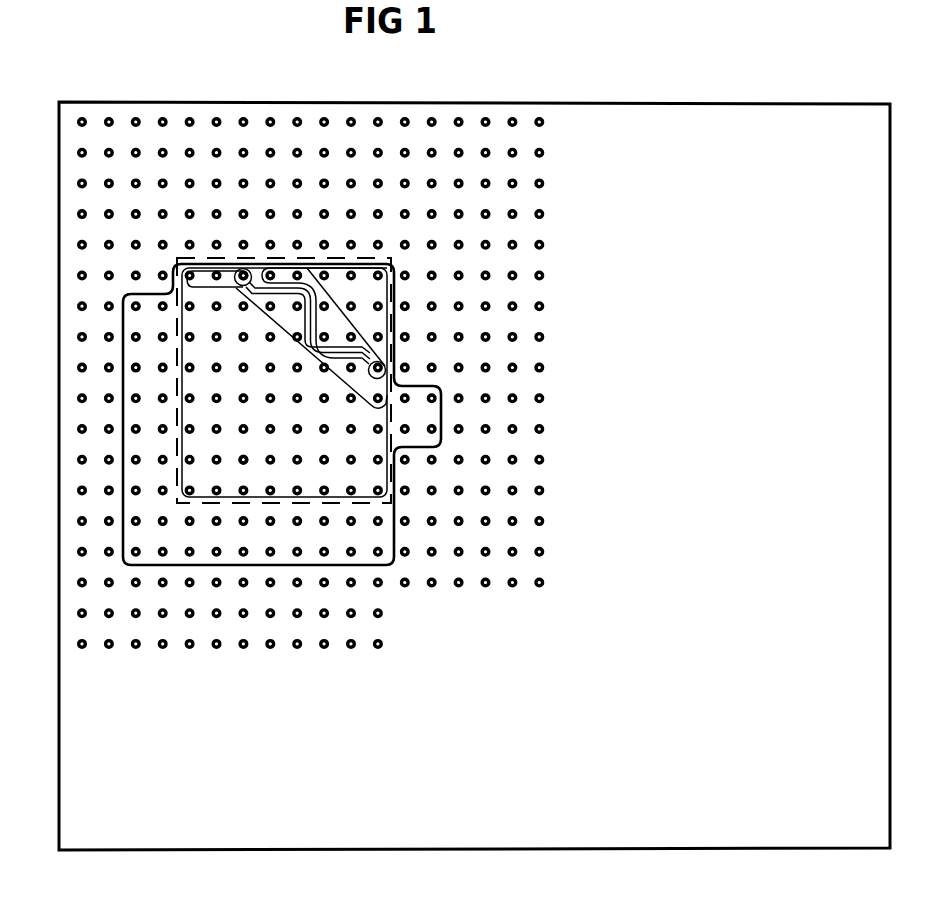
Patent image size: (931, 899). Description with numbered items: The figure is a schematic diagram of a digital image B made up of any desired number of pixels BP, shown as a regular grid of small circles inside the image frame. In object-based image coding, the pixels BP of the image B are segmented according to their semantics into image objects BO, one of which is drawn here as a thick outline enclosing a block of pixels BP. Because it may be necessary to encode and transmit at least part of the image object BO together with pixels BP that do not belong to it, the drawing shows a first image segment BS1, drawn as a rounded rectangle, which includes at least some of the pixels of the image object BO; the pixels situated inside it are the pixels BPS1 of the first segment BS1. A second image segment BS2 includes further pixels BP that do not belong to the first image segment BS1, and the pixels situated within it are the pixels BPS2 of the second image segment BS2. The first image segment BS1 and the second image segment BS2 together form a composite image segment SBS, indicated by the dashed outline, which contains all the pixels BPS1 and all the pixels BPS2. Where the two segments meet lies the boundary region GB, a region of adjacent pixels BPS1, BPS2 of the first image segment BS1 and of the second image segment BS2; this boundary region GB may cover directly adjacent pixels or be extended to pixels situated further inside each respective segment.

The digital image B is at (367, 102).
The pixels BP is at (163, 117).
The image object BO is at (258, 558).
The composite image segment SBS is at (392, 276).
The first image segment BS1 is at (252, 500).
The second image segment BS2 is at (280, 260).
The pixels of the second image segment BPS2 is at (333, 268).
The pixels of the first segment BPS1 is at (243, 458).
The boundary region GB is at (241, 286).